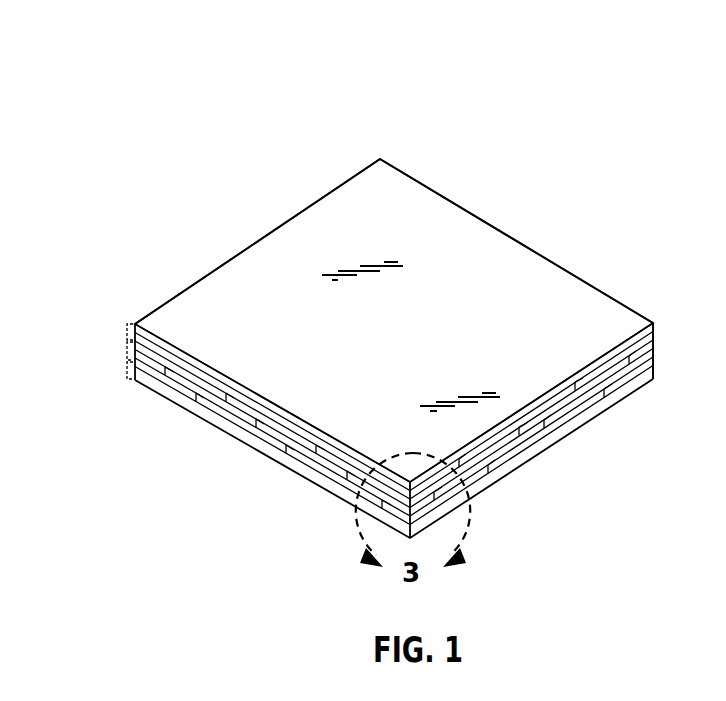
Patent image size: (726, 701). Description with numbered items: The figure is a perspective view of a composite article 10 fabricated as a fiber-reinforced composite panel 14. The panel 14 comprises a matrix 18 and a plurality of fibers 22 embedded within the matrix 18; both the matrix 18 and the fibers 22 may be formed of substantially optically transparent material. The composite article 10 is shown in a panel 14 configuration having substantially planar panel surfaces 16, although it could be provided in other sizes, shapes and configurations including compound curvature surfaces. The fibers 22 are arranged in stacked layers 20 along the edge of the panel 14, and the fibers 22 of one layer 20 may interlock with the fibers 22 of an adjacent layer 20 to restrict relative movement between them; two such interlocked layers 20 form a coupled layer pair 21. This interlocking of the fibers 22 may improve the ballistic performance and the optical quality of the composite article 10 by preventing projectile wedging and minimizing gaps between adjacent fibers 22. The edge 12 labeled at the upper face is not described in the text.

The composite article 10 is at (193, 285).
The top edge 12 is at (252, 266).
The fiber-reinforced composite panel 14 is at (431, 127).
The planar panel surfaces 16 is at (468, 240).
The matrix 18 is at (176, 396).
The layer 20 is at (655, 367).
The coupled layer pair 21 is at (125, 333).
The fibers 22 is at (300, 453).